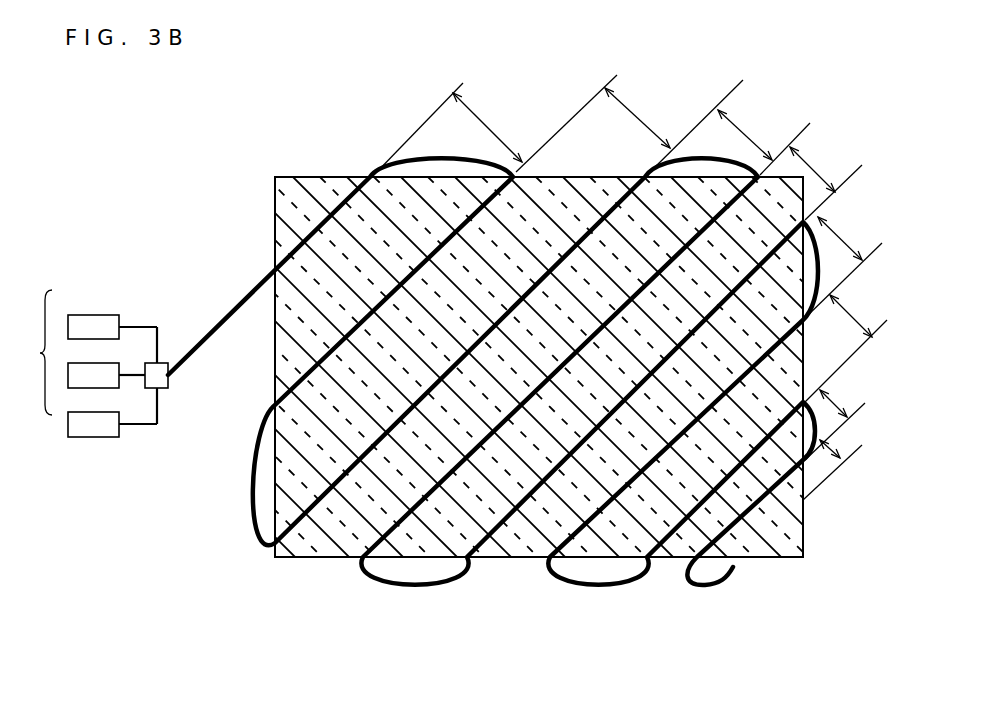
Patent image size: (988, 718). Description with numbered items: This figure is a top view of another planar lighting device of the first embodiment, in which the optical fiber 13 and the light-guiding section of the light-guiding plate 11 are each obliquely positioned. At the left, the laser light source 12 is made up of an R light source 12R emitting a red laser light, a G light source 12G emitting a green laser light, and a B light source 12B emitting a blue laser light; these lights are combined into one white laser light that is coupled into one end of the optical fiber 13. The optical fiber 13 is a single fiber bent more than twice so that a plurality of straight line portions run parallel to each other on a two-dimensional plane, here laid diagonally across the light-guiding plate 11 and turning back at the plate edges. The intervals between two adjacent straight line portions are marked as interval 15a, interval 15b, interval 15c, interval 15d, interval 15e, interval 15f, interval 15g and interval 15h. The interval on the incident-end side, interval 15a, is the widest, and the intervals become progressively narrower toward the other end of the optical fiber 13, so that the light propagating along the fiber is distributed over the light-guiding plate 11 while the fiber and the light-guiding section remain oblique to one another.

The light-guiding plate 11 is at (275, 202).
The laser light source 12 is at (93, 363).
The R light source 12R is at (110, 315).
The G light source 12G is at (110, 363).
The B light source 12B is at (110, 412).
The optical fiber 13 is at (255, 292).
The interval 15a is at (494, 126).
The interval 15b is at (674, 127).
The interval 15c is at (764, 142).
The interval 15d is at (826, 183).
The interval 15e is at (843, 267).
The interval 15f is at (846, 348).
The pitch g of optical fiber 15g is at (839, 422).
The pitch h of optical fiber 15h is at (840, 465).